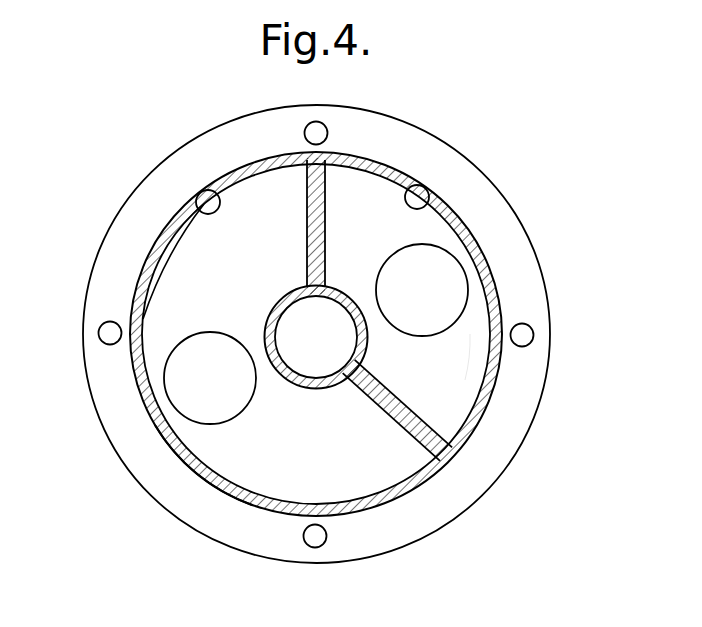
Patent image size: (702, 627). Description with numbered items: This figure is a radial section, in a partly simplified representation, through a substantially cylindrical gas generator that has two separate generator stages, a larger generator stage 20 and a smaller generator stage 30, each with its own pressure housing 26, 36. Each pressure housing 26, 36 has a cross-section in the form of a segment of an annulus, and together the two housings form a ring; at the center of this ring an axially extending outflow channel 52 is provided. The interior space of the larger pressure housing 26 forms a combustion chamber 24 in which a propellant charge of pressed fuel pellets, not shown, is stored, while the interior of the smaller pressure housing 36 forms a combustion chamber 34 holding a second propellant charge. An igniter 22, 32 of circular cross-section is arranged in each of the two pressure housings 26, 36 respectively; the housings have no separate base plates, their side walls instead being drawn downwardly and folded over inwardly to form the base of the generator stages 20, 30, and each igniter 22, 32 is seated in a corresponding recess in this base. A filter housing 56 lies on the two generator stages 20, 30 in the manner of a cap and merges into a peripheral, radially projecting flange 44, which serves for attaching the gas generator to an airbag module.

The larger generator stage 20 is at (178, 297).
The igniter 22 is at (180, 363).
The combustion chamber 24 is at (207, 438).
The pressure housing 26 is at (204, 193).
The smaller generator stage 30 is at (468, 325).
The igniter 32 is at (437, 273).
The combustion chamber 34 is at (457, 393).
The pressure housing 36 is at (428, 194).
The flange 44 is at (218, 527).
The outflow channel 52 is at (315, 343).
The filter housing 56 is at (392, 152).